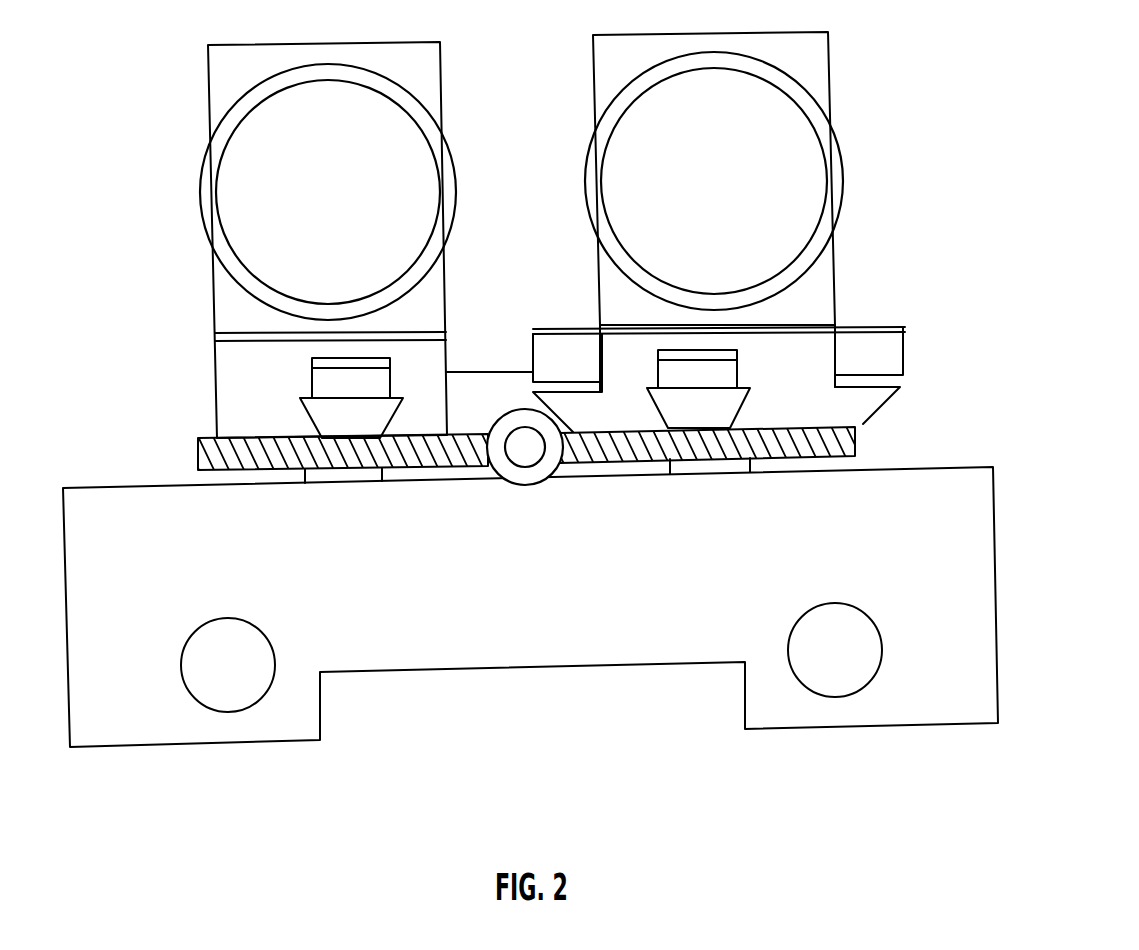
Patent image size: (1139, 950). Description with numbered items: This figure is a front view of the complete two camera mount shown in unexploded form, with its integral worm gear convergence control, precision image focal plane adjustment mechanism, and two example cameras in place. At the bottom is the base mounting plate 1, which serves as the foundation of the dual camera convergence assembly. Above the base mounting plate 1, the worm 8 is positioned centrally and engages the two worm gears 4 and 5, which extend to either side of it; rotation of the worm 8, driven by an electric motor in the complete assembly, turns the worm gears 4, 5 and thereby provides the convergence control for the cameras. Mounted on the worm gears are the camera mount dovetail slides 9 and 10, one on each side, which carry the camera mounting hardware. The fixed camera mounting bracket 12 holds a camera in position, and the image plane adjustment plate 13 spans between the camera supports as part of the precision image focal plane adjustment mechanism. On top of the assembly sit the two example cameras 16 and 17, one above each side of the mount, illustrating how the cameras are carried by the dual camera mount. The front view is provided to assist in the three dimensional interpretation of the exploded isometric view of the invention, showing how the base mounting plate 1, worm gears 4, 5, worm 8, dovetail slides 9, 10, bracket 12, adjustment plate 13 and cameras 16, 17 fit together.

The base mounting plate 1 is at (1012, 590).
The worm gear 4 is at (867, 440).
The worm gear 5 is at (185, 457).
The worm 8 is at (515, 492).
The camera mount dovetail slide 9 is at (722, 410).
The camera mount dovetail slide 10 is at (322, 418).
The fixed camera mounting bracket 12 is at (210, 377).
The image plane adjustment plate 13 is at (908, 342).
The camera 16 is at (838, 72).
The camera 17 is at (200, 77).